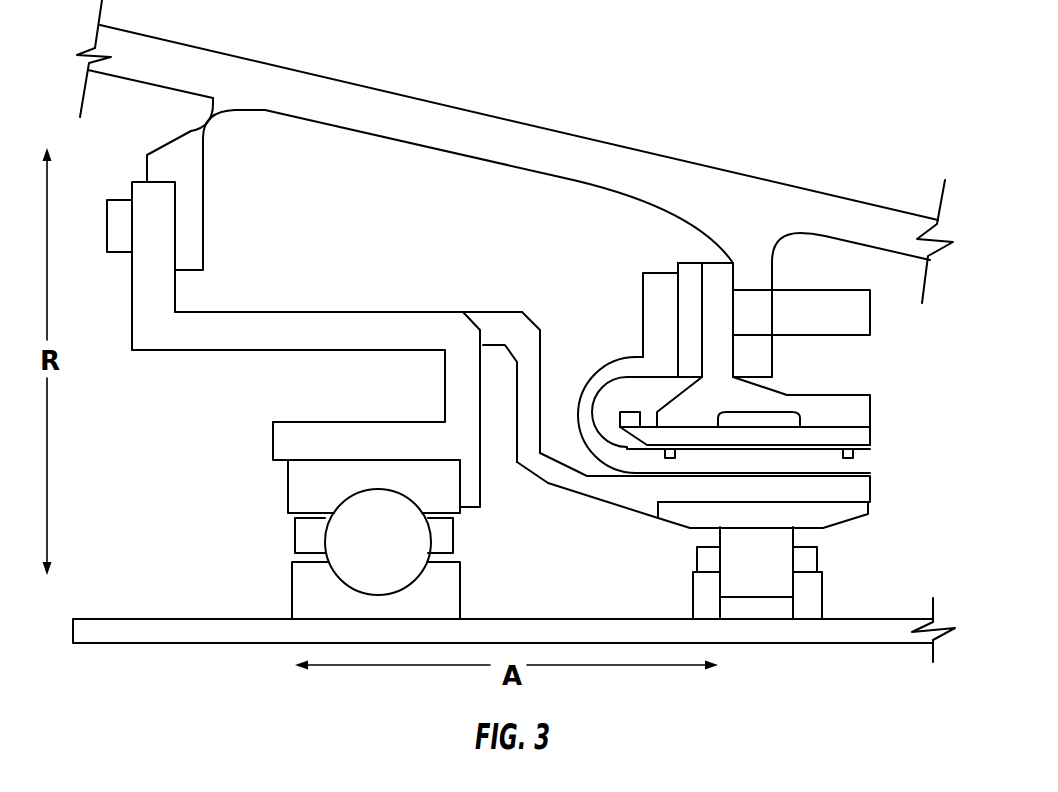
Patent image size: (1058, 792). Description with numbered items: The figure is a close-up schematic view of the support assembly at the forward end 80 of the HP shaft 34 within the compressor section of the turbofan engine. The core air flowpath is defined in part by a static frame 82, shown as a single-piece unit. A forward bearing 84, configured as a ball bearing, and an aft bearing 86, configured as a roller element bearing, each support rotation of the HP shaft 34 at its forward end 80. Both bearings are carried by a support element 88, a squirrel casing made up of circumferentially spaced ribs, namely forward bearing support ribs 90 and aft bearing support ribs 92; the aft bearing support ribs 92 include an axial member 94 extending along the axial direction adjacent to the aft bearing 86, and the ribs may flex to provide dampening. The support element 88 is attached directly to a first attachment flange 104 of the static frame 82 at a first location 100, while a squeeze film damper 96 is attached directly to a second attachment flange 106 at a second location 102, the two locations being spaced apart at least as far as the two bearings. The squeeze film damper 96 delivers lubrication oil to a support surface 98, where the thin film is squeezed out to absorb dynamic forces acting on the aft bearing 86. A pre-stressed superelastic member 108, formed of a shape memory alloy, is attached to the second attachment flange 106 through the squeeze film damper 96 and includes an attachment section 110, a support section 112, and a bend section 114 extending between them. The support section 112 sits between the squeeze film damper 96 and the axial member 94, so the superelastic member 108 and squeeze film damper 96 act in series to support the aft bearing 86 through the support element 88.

The HP shaft 34 is at (825, 630).
The forward end 80 is at (160, 663).
The static frame 82 is at (467, 105).
The forward bearing 84 is at (285, 547).
The aft bearing 86 is at (860, 590).
The support element 88 is at (408, 242).
The forward bearing support ribs 90 is at (425, 420).
The aft bearing support ribs 92 is at (528, 385).
The axial member 94 is at (632, 502).
The squeeze film damper 96 is at (826, 410).
The support surface 98 is at (806, 448).
The first location 100 is at (258, 152).
The second location 102 is at (797, 260).
The first attachment flange 104 is at (180, 165).
The second attachment flange 106 is at (763, 280).
The superelastic member 108 is at (620, 347).
The attachment section 110 is at (690, 313).
The support section 112 is at (747, 462).
The bend section 114 is at (573, 423).